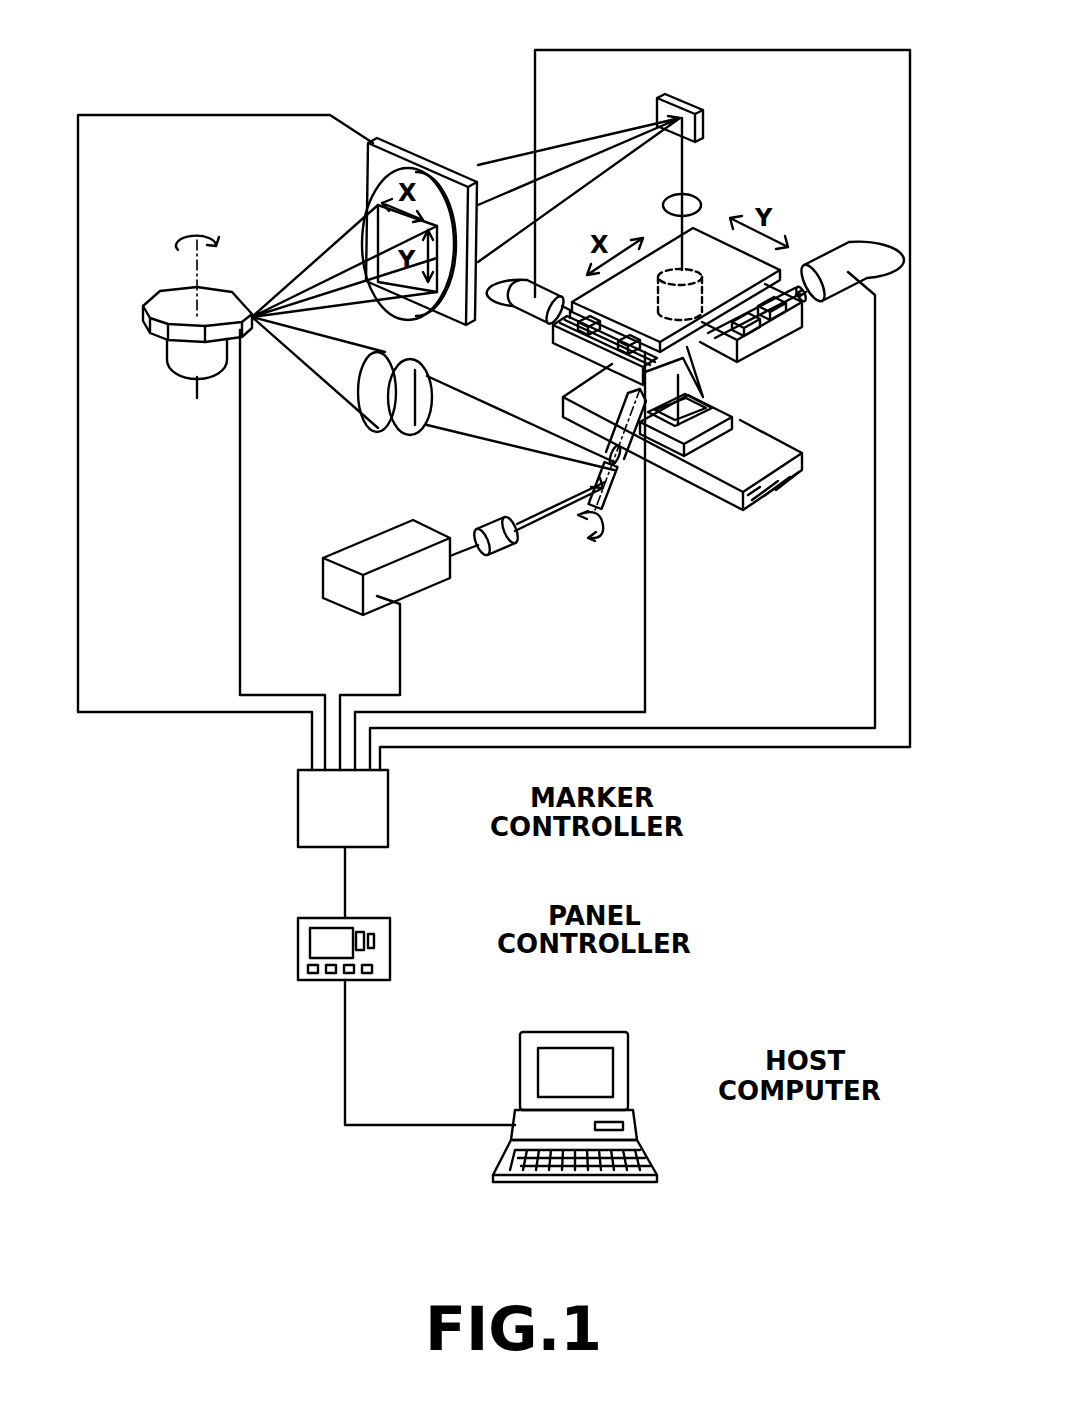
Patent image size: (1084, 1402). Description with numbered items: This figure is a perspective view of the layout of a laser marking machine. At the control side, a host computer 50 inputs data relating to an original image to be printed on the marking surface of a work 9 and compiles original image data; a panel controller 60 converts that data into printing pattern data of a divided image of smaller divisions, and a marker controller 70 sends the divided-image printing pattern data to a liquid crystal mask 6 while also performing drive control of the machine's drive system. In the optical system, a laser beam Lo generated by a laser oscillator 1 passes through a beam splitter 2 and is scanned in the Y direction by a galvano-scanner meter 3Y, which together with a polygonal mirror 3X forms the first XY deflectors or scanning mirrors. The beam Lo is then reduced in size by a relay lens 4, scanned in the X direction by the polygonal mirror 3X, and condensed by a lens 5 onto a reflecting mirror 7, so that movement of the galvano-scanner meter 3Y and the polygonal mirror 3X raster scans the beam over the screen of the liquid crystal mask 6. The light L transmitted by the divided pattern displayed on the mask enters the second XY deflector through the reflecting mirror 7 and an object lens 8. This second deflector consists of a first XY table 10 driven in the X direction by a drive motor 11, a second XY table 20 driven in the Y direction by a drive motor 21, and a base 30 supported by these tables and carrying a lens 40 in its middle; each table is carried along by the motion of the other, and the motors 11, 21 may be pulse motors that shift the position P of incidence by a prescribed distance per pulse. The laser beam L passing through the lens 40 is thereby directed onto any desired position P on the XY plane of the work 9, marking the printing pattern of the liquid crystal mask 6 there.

The laser oscillator 1 is at (362, 550).
The beam splitter 2 is at (490, 522).
The polygonal mirror 3X is at (225, 302).
The galvano-scanner meter 3Y is at (612, 515).
The relay lens 4 is at (375, 430).
The lens 5 is at (380, 192).
The liquid crystal mask 6 is at (373, 143).
The reflecting mirror 7 is at (690, 100).
The object lens 8 is at (700, 205).
The work 9 is at (775, 412).
The first XY table 10 is at (797, 338).
The drive motor 11 is at (843, 246).
The second XY table 20 is at (550, 338).
The drive motor 21 is at (521, 300).
The base 30 is at (773, 268).
The lens 40 is at (662, 272).
The host computer 50 is at (630, 1086).
The panel controller 60 is at (390, 940).
The marker controller 70 is at (389, 812).
The laser beam L is at (603, 148).
The laser beam Lo is at (530, 548).
The position of incidence P is at (712, 418).